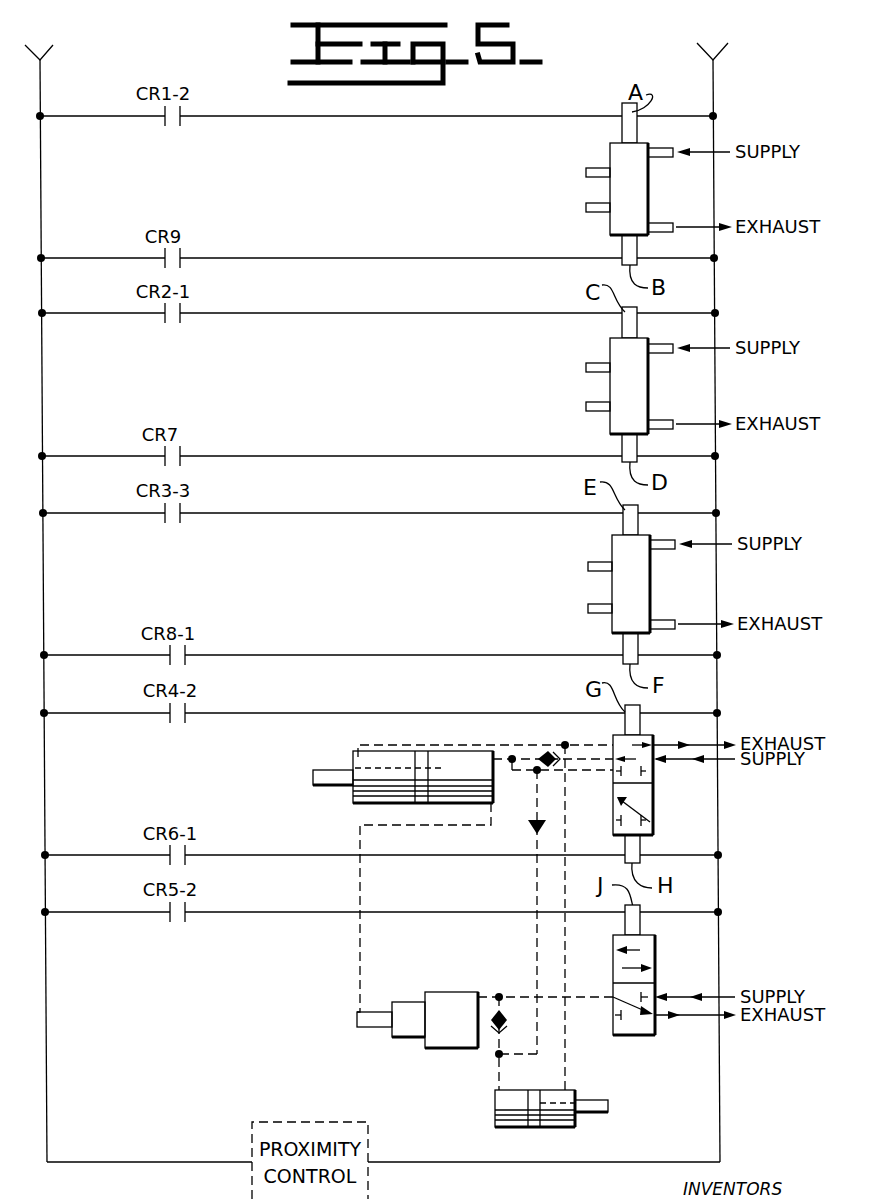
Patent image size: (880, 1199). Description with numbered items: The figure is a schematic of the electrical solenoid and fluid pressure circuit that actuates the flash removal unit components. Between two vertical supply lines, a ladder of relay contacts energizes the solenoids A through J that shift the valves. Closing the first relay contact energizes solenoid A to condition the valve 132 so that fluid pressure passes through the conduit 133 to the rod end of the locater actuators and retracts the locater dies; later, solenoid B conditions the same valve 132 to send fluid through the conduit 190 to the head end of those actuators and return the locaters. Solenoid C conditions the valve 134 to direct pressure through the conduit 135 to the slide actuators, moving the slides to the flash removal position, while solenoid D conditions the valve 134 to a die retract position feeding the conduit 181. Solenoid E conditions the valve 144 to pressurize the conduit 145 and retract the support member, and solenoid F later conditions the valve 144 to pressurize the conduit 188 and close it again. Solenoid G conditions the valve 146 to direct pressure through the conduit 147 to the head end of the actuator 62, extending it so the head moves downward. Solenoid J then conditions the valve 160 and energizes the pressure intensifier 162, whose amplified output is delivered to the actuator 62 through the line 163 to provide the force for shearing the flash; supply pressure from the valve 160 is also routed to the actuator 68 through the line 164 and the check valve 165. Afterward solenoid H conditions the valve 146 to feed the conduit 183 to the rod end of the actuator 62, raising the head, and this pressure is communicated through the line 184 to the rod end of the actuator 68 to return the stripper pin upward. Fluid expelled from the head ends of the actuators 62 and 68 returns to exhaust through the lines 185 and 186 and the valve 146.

The actuator 62 is at (352, 748).
The actuator 68 is at (500, 1098).
The valve 132 is at (620, 188).
The conduit 133 is at (582, 147).
The valve 134 is at (620, 385).
The conduit 135 is at (596, 365).
The valve 144 is at (620, 582).
The conduit 145 is at (598, 565).
The valve 146 is at (668, 812).
The conduit 147 is at (538, 752).
The valve 160 is at (668, 968).
The pressure intensifier 162 is at (445, 980).
The line 163 is at (360, 930).
The line 164 is at (497, 1073).
The check valve 165 is at (523, 982).
The conduit 181 is at (598, 408).
The conduit 183 is at (430, 747).
The line 184 is at (568, 1078).
The line 185 is at (540, 773).
The line 186 is at (535, 845).
The conduit 188 is at (600, 610).
The conduit 190 is at (597, 212).